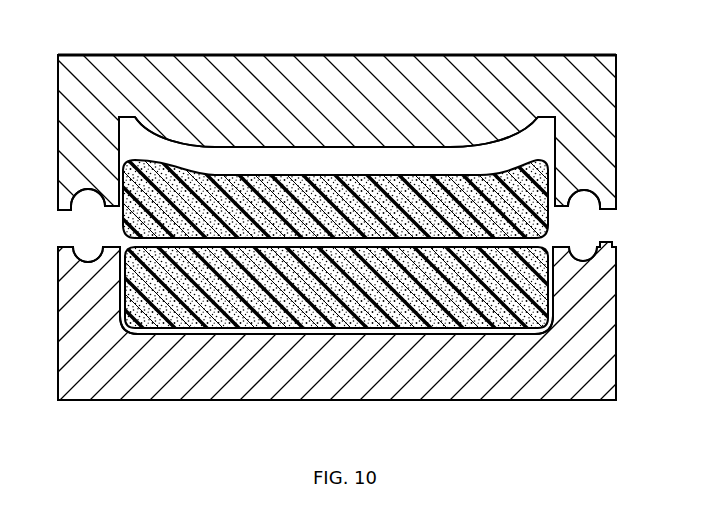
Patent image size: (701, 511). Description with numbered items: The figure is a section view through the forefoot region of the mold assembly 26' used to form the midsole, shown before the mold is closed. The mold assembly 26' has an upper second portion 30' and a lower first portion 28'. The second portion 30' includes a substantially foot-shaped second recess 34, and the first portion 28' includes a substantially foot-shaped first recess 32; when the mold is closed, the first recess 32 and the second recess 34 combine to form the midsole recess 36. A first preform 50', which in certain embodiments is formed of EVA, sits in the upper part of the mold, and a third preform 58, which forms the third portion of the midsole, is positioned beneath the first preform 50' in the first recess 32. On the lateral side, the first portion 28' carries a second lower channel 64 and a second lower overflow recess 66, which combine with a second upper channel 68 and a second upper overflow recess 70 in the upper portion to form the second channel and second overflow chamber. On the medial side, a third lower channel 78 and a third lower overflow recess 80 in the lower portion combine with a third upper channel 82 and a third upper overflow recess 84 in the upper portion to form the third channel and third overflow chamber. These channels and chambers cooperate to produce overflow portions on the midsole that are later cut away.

The mold assembly 26' is at (366, 225).
The second portion 30' is at (350, 255).
The first portion 28' is at (350, 255).
The midsole recess 36 is at (236, 158).
The second recess 34 is at (450, 147).
The first preform 50' is at (350, 255).
The third preform 58 is at (400, 318).
The first recess 32 is at (447, 332).
The third upper channel 82 is at (108, 208).
The third upper overflow recess 84 is at (60, 211).
The second upper overflow recess 70 is at (598, 216).
The second upper channel 68 is at (558, 211).
The third lower channel 78 is at (110, 248).
The third lower overflow recess 80 is at (68, 255).
The second lower channel 64 is at (558, 250).
The second lower overflow recess 66 is at (585, 257).